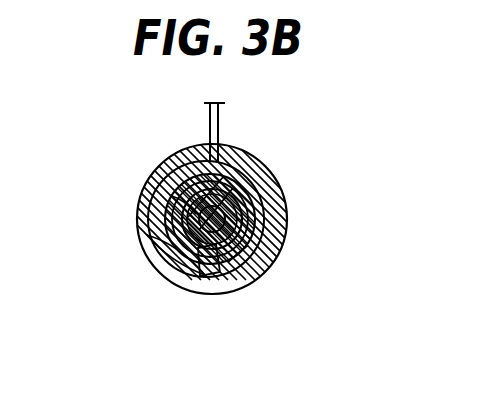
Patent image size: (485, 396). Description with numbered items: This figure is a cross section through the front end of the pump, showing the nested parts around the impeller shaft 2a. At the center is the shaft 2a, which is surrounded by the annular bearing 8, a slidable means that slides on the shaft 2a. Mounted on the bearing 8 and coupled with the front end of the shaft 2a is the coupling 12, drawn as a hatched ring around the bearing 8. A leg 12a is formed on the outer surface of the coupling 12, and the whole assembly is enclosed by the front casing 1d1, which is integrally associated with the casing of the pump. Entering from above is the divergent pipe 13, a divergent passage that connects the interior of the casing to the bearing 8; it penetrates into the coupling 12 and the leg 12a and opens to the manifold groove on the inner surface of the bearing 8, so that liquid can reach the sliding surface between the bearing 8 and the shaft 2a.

The front casing 1d1 is at (255, 165).
The coupling 12 is at (257, 279).
The leg 12a is at (140, 247).
The bearing 8 is at (275, 252).
The shaft 2a is at (212, 220).
The divergent pipe 13 is at (210, 122).